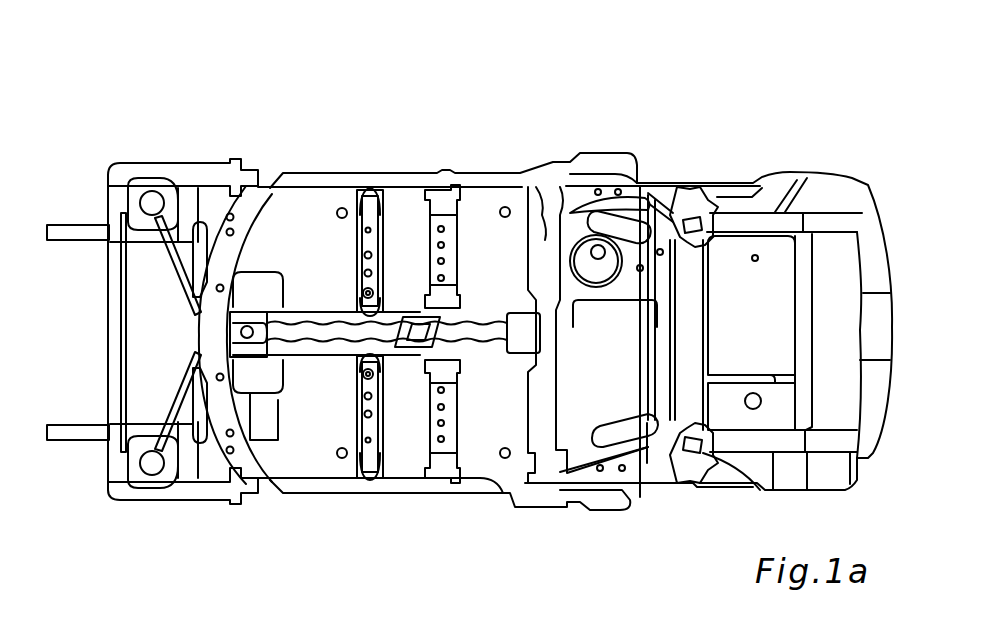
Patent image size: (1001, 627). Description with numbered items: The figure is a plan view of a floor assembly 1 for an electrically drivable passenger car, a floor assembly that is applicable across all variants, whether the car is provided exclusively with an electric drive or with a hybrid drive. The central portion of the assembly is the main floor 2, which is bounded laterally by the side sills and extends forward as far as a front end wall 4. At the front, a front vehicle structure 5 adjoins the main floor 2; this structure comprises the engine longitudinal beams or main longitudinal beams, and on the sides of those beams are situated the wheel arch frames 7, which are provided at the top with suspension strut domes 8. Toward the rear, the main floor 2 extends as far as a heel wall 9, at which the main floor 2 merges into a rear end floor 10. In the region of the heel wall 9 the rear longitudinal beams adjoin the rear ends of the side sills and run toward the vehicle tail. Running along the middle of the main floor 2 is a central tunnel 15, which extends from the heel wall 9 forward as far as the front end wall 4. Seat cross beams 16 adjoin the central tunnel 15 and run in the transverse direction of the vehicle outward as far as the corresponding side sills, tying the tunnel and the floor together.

The floor assembly 1 is at (735, 95).
The main floor 2 is at (343, 123).
The front end wall 4 is at (198, 335).
The front vehicle structure 5 is at (172, 138).
The wheel arch frames 7 is at (178, 503).
The suspension strut domes 8 is at (147, 480).
The heel wall 9 is at (553, 168).
The rear end floor 10 is at (638, 143).
The central tunnel 15 is at (323, 348).
The seat cross beams 16 is at (385, 228).